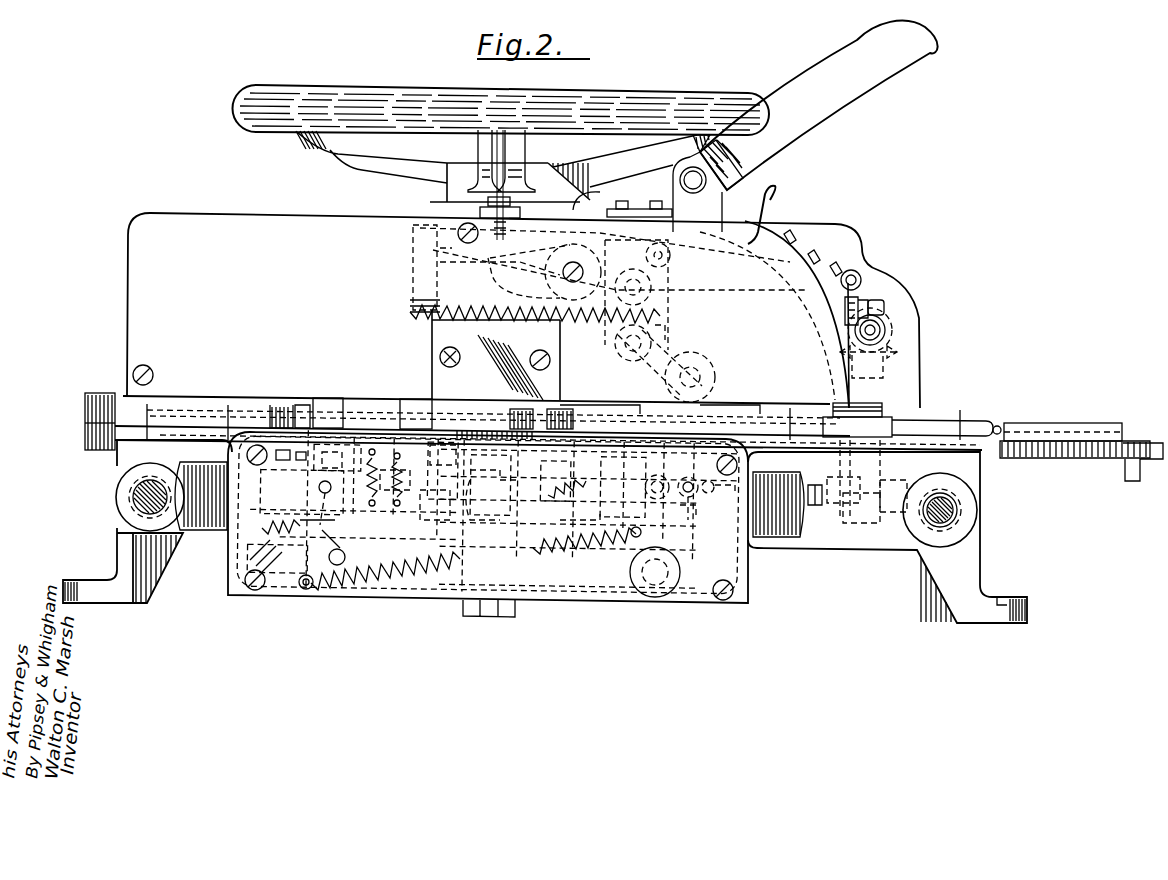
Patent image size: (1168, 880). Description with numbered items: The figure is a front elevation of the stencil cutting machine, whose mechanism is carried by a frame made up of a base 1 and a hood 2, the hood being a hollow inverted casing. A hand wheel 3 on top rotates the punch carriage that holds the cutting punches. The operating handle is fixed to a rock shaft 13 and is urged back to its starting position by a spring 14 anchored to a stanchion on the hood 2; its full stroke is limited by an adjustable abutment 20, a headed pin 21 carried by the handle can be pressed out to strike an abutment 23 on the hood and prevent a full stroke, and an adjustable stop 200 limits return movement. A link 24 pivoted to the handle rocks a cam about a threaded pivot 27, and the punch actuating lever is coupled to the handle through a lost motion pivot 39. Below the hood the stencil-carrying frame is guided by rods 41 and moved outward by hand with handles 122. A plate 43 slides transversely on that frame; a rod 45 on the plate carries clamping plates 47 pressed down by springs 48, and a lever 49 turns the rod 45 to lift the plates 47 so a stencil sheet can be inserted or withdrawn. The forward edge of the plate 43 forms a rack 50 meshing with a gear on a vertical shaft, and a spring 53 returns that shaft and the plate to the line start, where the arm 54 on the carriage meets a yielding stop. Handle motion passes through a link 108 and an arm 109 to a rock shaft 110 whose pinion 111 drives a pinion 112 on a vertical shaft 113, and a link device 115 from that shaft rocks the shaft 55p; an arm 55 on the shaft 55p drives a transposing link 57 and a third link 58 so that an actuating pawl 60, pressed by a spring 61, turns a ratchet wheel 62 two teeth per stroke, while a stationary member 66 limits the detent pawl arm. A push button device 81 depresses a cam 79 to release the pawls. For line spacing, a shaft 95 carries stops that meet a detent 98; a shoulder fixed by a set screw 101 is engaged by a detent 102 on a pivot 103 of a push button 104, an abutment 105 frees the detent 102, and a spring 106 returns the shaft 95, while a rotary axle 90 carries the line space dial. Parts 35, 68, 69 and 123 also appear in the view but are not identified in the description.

The base 1 is at (970, 475).
The hood 2 is at (140, 303).
The hand wheel 3 is at (318, 100).
The rock shaft 13 is at (878, 88).
The spring 14 is at (572, 322).
The adjustable abutment 20 is at (888, 300).
The headed pin 21 is at (693, 190).
The abutment 23 is at (778, 196).
The link 24 is at (544, 272).
The pivot 27 is at (470, 255).
The stop 35 is at (729, 487).
The lost motion pivot 39 is at (630, 352).
The rods 41 is at (140, 502).
The plate 43 is at (796, 410).
The rod 45 is at (926, 420).
The clamping plates 47 is at (616, 340).
The springs 48 is at (552, 380).
The lever 49 is at (870, 408).
The rack 50 is at (1085, 453).
The spring 53 is at (530, 552).
The arm 54 is at (1132, 471).
The arm 55 is at (682, 522).
The shaft 55p is at (655, 582).
The transposing link 57 is at (168, 445).
The third link 58 is at (660, 500).
The actuating pawl 60 is at (391, 480).
The spring 61 is at (567, 495).
The ratchet wheel 62 is at (493, 497).
The stationary member 66 is at (588, 506).
The guide 68 is at (435, 459).
The lug 69 is at (1004, 428).
The cam 79 is at (432, 520).
The push button device 81 is at (416, 405).
The rotary axle 90 is at (706, 450).
The shaft 95 is at (281, 566).
The detent 98 is at (287, 462).
The set screw 101 is at (259, 588).
The detent 102 is at (334, 461).
The pivot 103 is at (318, 490).
The push button 104 is at (330, 405).
The abutment 105 is at (346, 556).
The spring 106 is at (392, 582).
The link 108 is at (832, 262).
The arm 109 is at (862, 282).
The rock shaft 110 is at (885, 330).
The pinion 111 is at (890, 310).
The pinion 112 is at (900, 352).
The vertical shaft 113 is at (870, 470).
The link device 115 is at (838, 503).
The handles 122 is at (785, 530).
The bearing web 123 is at (212, 518).
The adjustable stop 200 is at (596, 199).